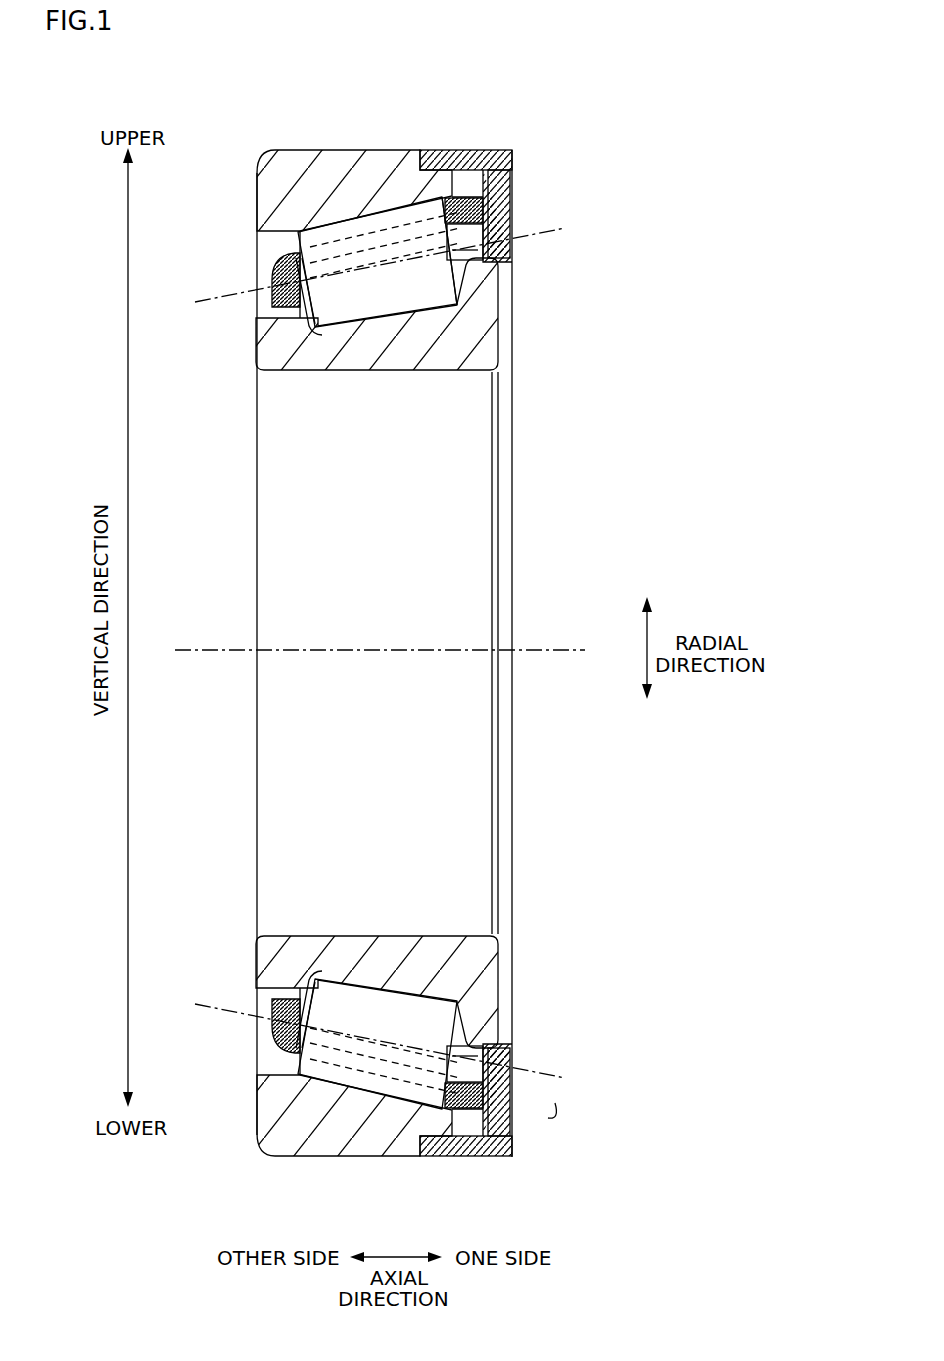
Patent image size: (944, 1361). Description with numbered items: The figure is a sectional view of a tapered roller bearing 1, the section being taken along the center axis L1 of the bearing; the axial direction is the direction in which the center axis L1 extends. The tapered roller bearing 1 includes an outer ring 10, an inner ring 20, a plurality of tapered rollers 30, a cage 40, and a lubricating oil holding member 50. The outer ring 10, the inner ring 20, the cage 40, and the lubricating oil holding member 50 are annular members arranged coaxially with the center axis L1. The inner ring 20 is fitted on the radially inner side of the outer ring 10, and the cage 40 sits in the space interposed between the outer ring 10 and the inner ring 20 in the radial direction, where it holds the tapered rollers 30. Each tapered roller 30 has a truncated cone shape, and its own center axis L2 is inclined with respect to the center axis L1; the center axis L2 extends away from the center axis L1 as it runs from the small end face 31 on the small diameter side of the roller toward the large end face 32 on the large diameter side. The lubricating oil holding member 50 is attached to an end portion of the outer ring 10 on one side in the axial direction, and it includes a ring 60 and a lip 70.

The tapered roller bearing 1 is at (627, 150).
The outer ring 10 is at (283, 170).
The inner ring 20 is at (498, 327).
The tapered roller 30 is at (389, 288).
The small end face 31 is at (302, 308).
The large end face 32 is at (483, 259).
The cage 40 is at (272, 258).
The lubricating oil holding member 50 is at (475, 651).
The ring 60 is at (450, 150).
The lip 70 is at (513, 194).
The center axis L1 is at (560, 652).
The center axis of tapered roller L2 is at (213, 300).